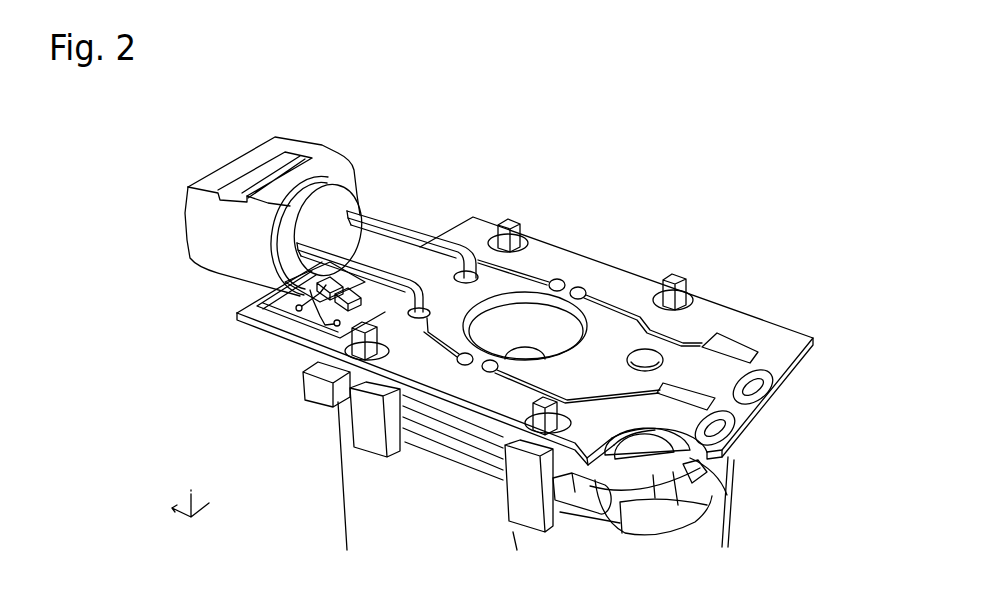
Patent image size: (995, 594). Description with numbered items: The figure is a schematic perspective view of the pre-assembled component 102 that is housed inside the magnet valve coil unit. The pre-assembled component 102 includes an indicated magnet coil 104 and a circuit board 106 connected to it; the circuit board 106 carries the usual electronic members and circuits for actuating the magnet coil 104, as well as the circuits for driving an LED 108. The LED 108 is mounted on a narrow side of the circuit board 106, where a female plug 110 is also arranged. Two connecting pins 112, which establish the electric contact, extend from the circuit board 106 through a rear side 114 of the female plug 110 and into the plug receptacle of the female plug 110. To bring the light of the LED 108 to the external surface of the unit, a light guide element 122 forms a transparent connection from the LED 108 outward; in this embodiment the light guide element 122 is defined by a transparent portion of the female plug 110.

The pre-assembled component 102 is at (145, 200).
The magnet coil 104 is at (662, 455).
The circuit board 106 is at (558, 258).
The LED 108 is at (378, 216).
The female plug 110 is at (198, 160).
The connecting pins 112 is at (420, 223).
The rear side of the female plug 114 is at (338, 193).
The light guide element 122 is at (297, 223).